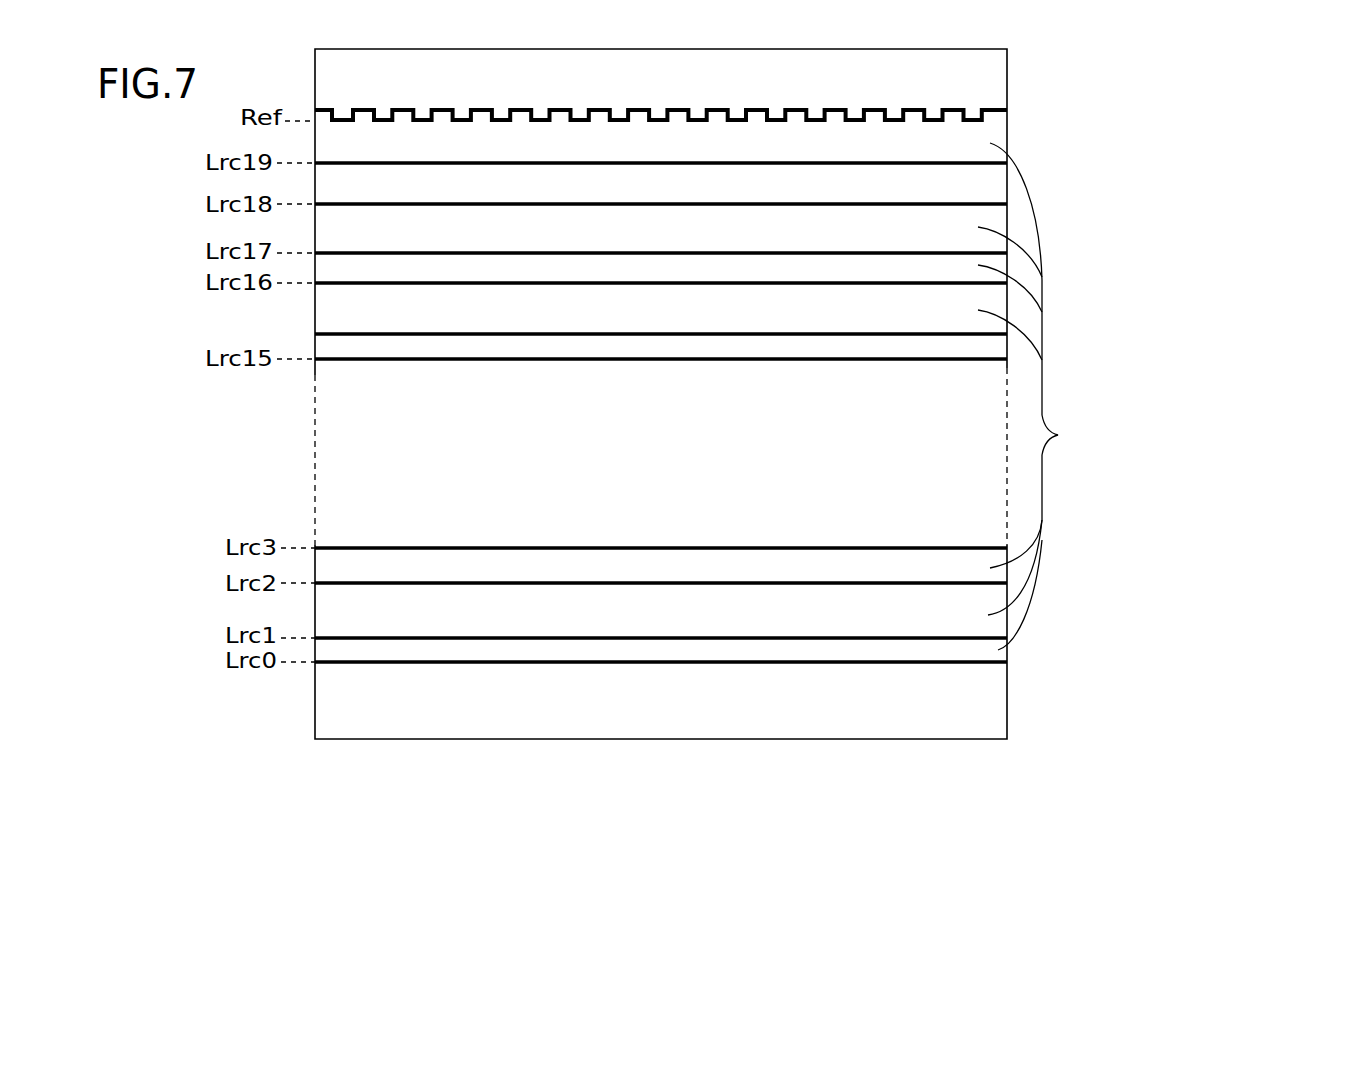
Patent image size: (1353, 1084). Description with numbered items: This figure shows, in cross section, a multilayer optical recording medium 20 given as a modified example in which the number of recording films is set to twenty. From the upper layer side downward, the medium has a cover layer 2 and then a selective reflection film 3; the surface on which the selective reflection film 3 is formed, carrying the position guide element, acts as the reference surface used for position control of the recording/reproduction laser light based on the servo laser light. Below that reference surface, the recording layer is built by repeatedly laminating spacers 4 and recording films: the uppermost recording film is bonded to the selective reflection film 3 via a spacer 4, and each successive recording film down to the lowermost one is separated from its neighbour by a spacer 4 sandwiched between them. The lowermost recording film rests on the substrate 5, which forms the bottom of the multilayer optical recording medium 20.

The cover layer 2 is at (983, 72).
The selective reflection film 3 is at (998, 111).
The spacer 4 is at (1086, 396).
The substrate 5 is at (968, 710).
The multilayer optical recording medium 20 is at (353, 750).